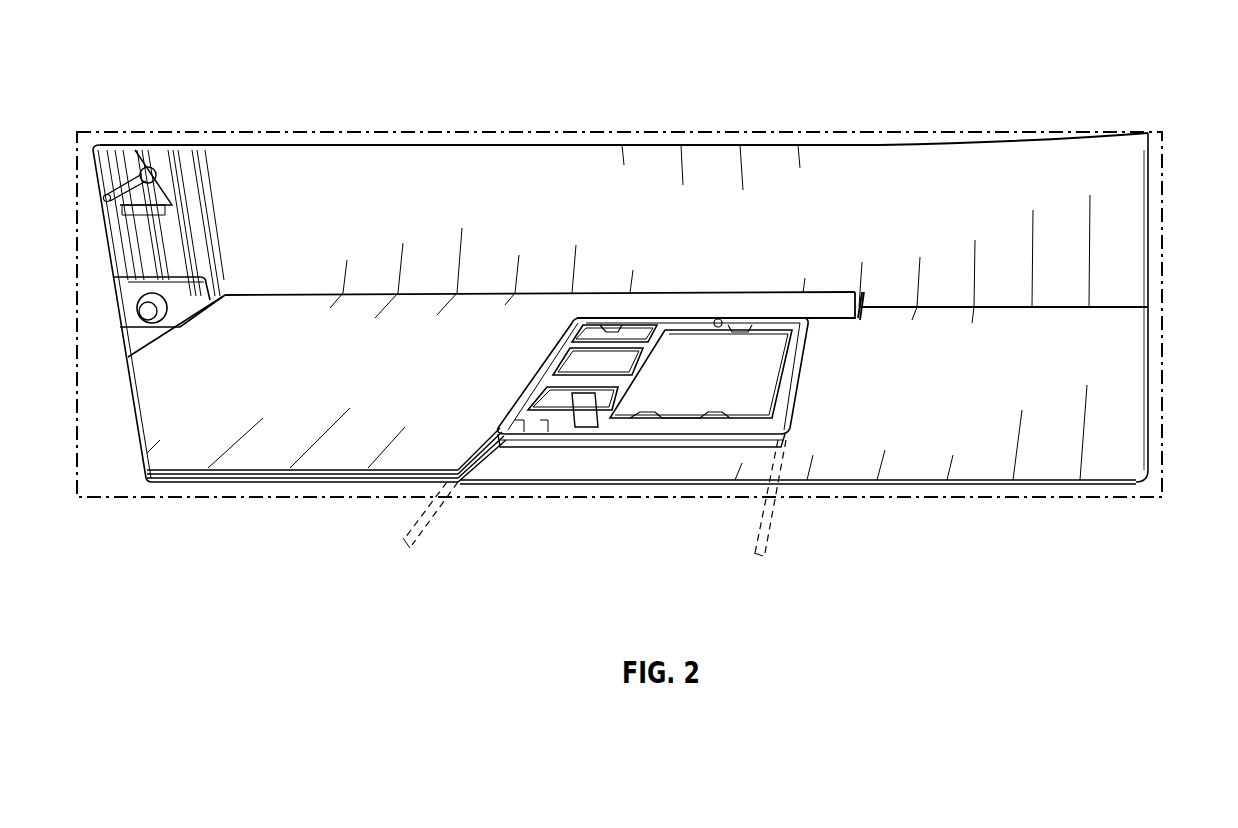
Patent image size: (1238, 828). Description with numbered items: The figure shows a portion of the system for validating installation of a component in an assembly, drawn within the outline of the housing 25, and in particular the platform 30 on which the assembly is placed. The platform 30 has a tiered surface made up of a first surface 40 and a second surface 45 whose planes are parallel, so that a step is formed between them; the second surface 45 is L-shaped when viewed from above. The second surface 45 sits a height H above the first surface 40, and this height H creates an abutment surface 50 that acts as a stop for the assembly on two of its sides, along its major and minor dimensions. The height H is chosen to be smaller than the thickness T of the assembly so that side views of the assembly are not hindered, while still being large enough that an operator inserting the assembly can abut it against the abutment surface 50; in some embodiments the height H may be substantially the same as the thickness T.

The housing 25 is at (413, 130).
The platform 30 is at (196, 497).
The first surface 40 is at (845, 452).
The second surface 45 is at (316, 306).
The abutment surface 50 is at (473, 470).
The height H is at (405, 549).
The thickness T is at (756, 556).